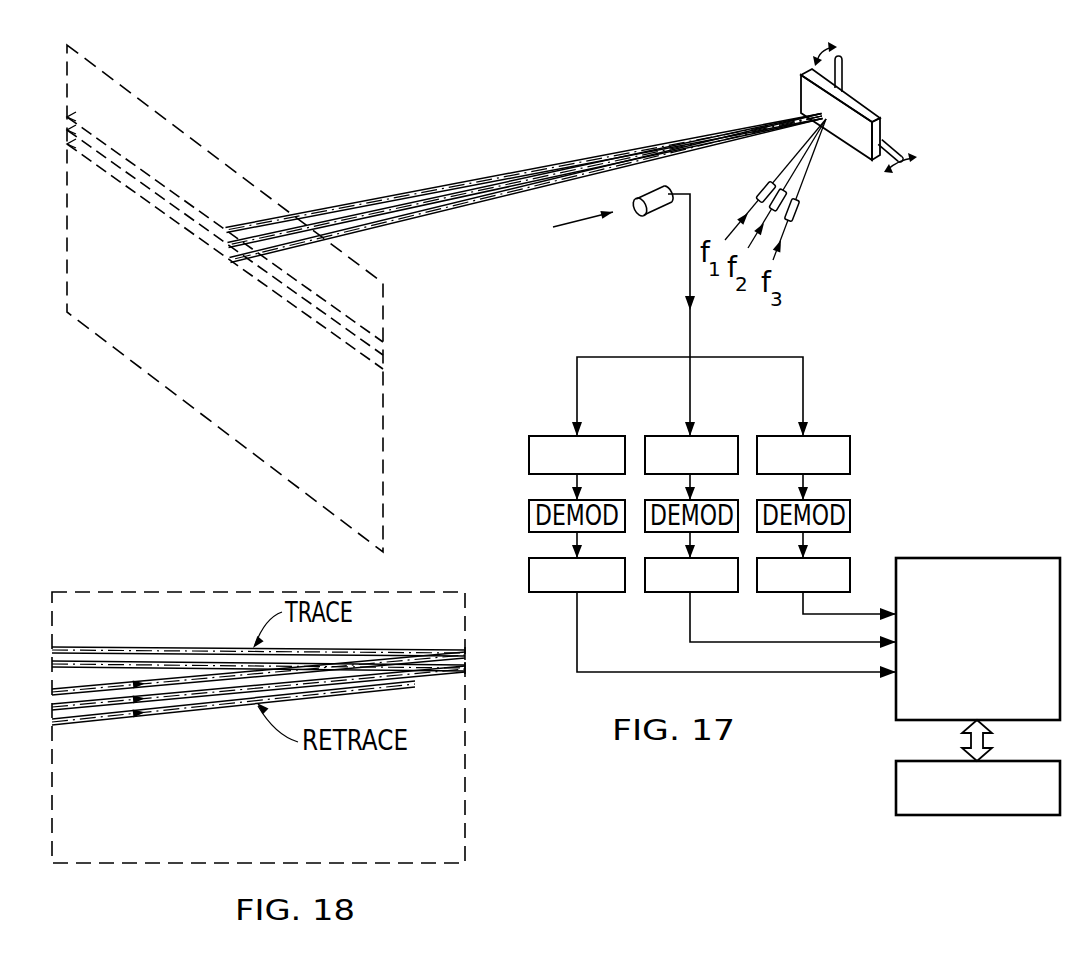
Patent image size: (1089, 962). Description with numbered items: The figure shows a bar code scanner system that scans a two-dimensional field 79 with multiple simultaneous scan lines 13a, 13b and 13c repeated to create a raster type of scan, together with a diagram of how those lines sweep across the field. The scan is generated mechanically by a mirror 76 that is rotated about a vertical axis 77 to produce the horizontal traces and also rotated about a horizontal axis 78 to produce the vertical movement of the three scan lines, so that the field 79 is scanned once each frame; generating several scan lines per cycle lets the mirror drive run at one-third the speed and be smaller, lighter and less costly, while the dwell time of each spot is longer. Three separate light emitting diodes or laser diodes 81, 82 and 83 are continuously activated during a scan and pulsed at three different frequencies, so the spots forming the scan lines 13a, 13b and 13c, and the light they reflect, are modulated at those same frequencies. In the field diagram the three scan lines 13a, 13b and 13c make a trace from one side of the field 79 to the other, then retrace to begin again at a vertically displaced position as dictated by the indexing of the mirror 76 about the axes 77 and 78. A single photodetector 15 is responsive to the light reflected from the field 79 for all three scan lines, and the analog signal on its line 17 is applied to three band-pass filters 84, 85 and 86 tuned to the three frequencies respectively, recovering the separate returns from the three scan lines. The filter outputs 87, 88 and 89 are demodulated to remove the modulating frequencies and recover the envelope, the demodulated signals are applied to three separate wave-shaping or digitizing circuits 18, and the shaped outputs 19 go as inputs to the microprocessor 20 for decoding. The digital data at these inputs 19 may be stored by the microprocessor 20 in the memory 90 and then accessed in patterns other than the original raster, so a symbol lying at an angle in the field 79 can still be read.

In FIG. 17, the scan line 13a is at (368, 338).
In FIG. 18, the scan line 13a is at (440, 650).
In FIG. 17, the scan line 13b is at (378, 352).
In FIG. 18, the scan line 13b is at (458, 668).
In FIG. 17, the scan line 13c is at (372, 380).
In FIG. 18, the scan line 13c is at (415, 684).
In FIG. 17, the photodetector 15 is at (655, 217).
In FIG. 17, the line 17 is at (690, 271).
In FIG. 17, the wave-shaping or digitizing circuits 18 is at (592, 588).
In FIG. 17, the shaped outputs 19 is at (832, 614).
In FIG. 17, the microprocessor 20 is at (978, 558).
In FIG. 17, the mirror 76 is at (808, 97).
In FIG. 17, the vertical axis 77 is at (847, 76).
In FIG. 17, the horizontal axis 78 is at (888, 143).
In FIG. 17, the field 79 is at (192, 405).
In FIG. 17, the light emitting diode or laser diode 81 is at (762, 187).
In FIG. 17, the light emitting diode or laser diode 82 is at (795, 188).
In FIG. 17, the light emitting diode or laser diode 83 is at (803, 208).
In FIG. 17, the band-pass filter 84 is at (553, 437).
In FIG. 17, the band-pass filter 85 is at (662, 437).
In FIG. 17, the band-pass filter 86 is at (826, 448).
In FIG. 17, the output 87 is at (573, 488).
In FIG. 17, the output 88 is at (700, 487).
In FIG. 17, the output 89 is at (808, 488).
In FIG. 17, the memory 90 is at (896, 790).